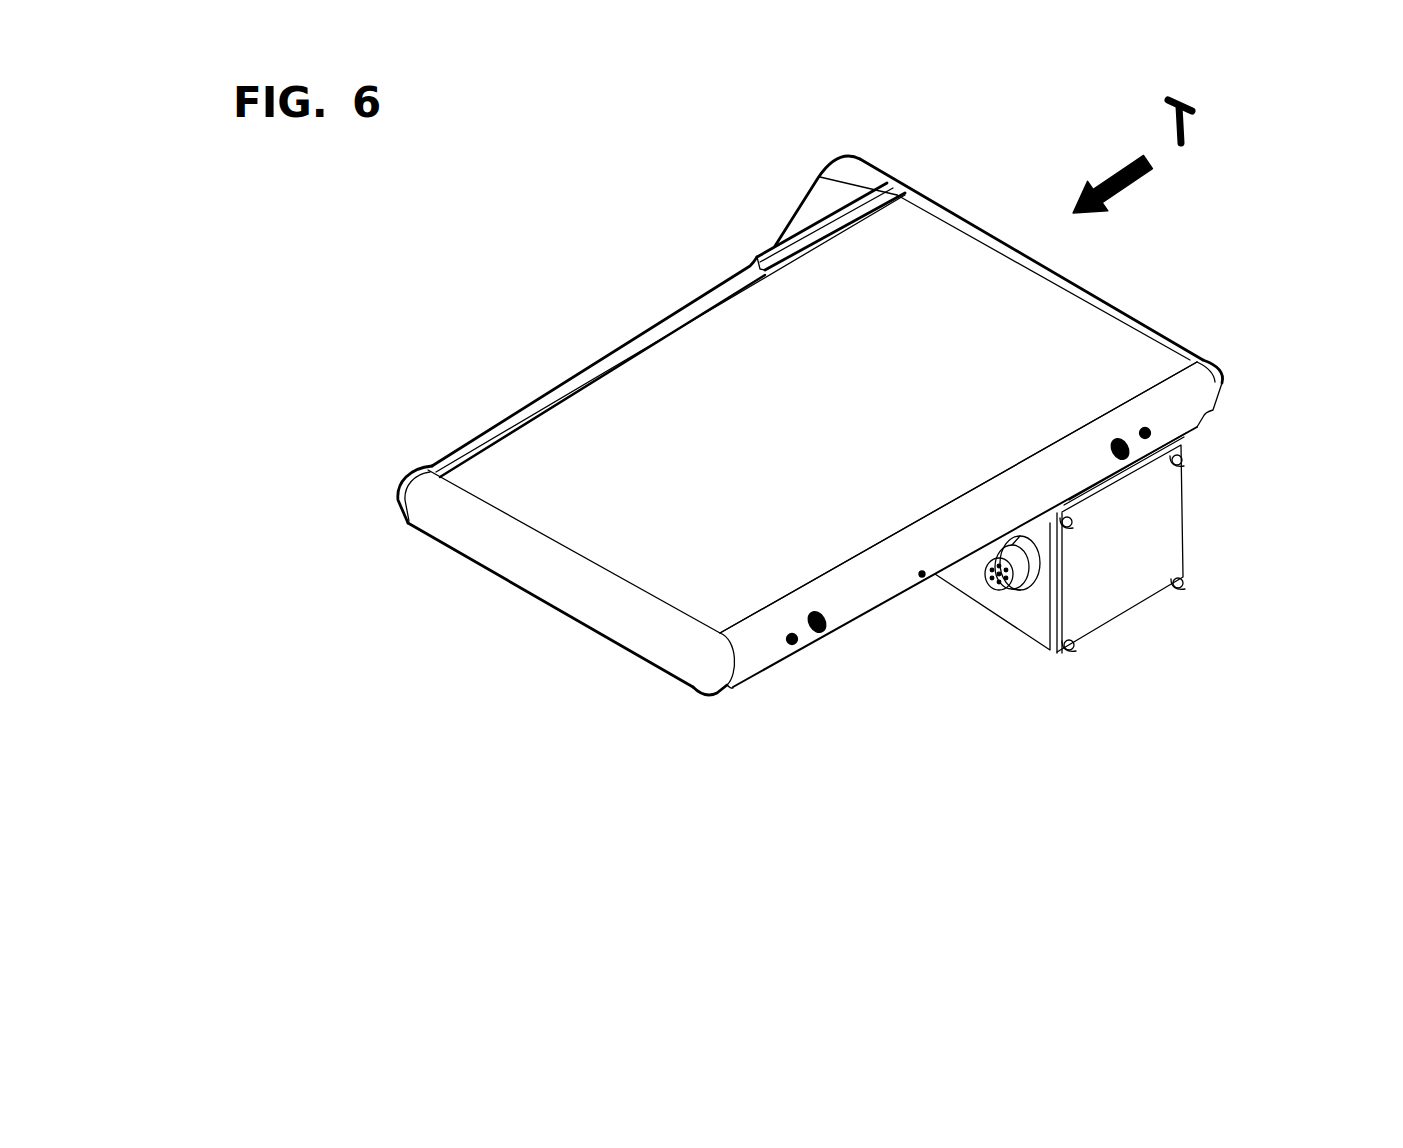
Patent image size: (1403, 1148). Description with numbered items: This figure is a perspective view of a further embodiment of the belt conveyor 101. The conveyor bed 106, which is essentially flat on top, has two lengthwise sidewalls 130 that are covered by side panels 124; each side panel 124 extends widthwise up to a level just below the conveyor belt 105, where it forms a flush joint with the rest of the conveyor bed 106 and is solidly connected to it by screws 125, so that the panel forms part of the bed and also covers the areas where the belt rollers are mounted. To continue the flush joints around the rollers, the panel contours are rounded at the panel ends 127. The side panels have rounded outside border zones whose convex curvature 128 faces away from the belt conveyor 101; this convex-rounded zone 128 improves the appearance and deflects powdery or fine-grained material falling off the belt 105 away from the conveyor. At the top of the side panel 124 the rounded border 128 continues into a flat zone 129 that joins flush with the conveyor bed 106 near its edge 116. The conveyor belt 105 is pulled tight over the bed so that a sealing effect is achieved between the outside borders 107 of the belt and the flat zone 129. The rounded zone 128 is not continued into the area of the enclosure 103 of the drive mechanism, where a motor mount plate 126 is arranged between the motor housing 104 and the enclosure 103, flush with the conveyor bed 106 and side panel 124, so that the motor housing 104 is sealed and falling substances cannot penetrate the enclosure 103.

The belt conveyor 101 is at (550, 252).
The enclosure of drive mechanism 103 is at (818, 195).
The housing of motor 104 is at (1080, 563).
The conveyor belt 105 is at (747, 377).
The conveyor bed 106 is at (741, 713).
The outside border of conveyor belt 107 is at (943, 507).
The edge of conveyor bed 116 is at (498, 422).
The side panel 124 is at (983, 538).
The screws 125 is at (815, 632).
The motor mount plate 126 is at (768, 253).
The panel ends 127 is at (398, 507).
The convex curvature of rounded border zone 128 is at (1163, 402).
The flat zone 129 is at (547, 395).
The lengthwise sidewall 130 is at (865, 615).